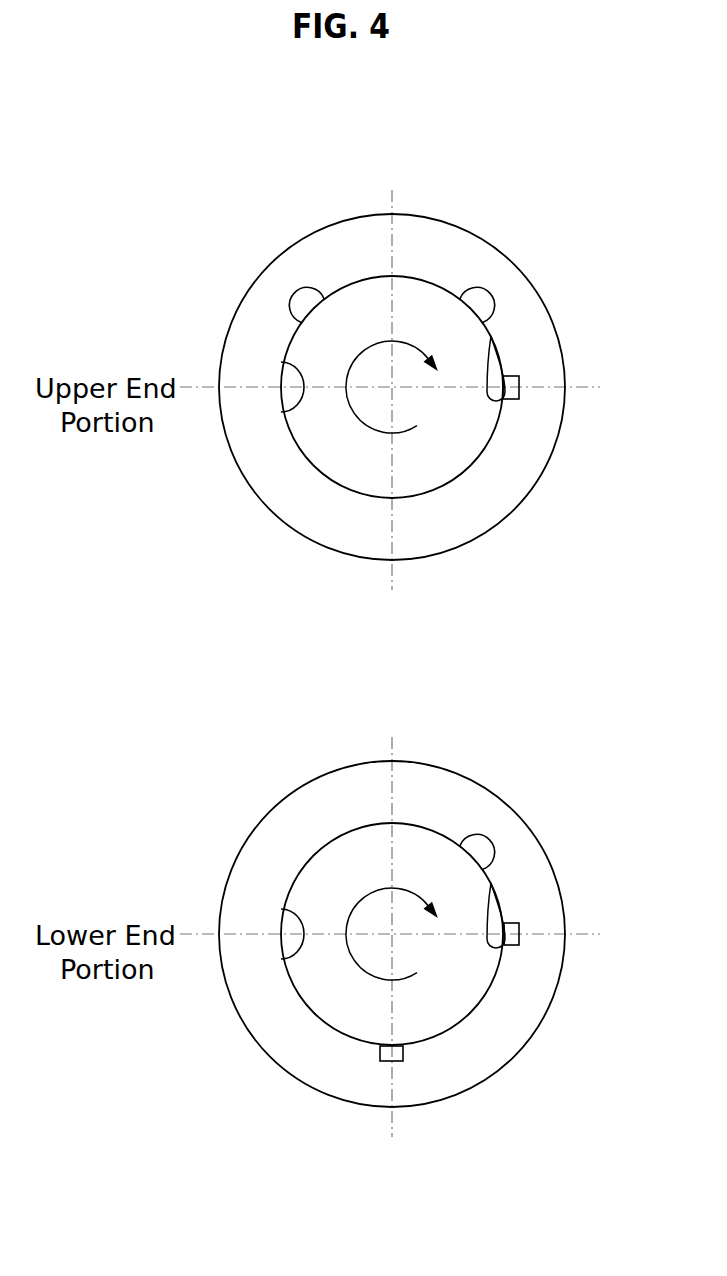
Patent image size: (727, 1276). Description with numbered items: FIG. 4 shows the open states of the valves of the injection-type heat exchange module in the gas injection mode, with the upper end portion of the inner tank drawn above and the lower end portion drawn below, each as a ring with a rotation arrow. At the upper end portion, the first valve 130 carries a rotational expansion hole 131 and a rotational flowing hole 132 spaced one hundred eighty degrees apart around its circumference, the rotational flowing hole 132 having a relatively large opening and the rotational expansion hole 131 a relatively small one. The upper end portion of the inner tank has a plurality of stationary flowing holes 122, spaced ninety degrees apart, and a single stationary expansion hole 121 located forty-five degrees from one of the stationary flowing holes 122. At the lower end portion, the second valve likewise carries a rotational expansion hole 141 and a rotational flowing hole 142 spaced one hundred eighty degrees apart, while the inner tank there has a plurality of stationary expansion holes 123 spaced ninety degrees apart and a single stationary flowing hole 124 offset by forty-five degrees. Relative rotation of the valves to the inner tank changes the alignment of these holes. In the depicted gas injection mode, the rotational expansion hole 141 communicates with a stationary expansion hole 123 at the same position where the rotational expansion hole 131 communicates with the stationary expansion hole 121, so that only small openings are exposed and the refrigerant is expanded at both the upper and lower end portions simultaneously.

The stationary expansion hole 121 is at (519, 376).
The stationary flowing hole 122 is at (303, 297).
The stationary expansion hole 123 is at (520, 923).
The stationary flowing hole 124 is at (478, 845).
The first valve 130 is at (430, 480).
The rotational expansion hole 131 is at (500, 404).
The rotational flowing hole 132 is at (283, 372).
The rotational expansion hole 141 is at (502, 955).
The rotational flowing hole 142 is at (283, 918).